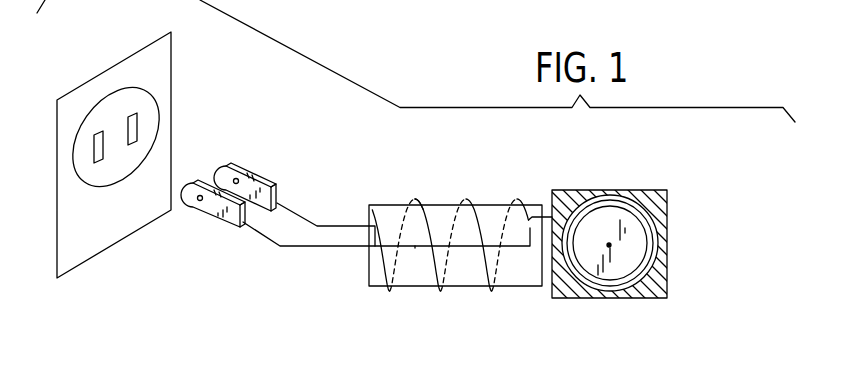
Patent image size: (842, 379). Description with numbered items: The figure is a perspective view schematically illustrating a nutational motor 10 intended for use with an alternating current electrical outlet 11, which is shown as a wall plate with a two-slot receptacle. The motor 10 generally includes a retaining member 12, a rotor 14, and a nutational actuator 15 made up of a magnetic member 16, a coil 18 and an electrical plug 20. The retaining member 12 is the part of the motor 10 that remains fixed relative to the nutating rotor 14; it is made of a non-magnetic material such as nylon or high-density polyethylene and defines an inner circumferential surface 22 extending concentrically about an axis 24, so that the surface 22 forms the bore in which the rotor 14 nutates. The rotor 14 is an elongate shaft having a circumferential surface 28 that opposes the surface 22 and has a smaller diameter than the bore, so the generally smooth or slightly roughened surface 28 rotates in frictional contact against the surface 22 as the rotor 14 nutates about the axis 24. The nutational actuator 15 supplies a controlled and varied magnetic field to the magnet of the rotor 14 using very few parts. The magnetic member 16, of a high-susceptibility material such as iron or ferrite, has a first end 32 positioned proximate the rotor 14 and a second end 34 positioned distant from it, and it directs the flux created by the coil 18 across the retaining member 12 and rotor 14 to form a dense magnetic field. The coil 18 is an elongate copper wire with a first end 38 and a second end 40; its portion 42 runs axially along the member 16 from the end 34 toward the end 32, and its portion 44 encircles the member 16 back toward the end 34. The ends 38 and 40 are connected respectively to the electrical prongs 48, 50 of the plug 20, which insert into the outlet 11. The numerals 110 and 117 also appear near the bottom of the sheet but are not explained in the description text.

The nutational motor 10 is at (444, 236).
The alternating current electrical outlet 11 is at (112, 56).
The retaining member 12 is at (618, 227).
The rotor 14 is at (692, 287).
The nutational actuator 15 is at (518, 317).
The magnetic member 16 is at (458, 159).
The coil 18 is at (370, 327).
The electrical plug 20 is at (355, 198).
The circumferential surface 22 is at (598, 198).
The axis 24 is at (687, 255).
The circumferential surface 28 is at (633, 170).
The first end 32 is at (552, 197).
The second end 34 is at (368, 215).
The first end 38 is at (242, 267).
The second end 40 is at (297, 187).
The portion 42 is at (432, 305).
The portion 44 is at (430, 182).
The electrical prong 48 is at (200, 252).
The electrical prong 50 is at (274, 155).
The component 110 is at (211, 365).
The component 117 is at (581, 372).